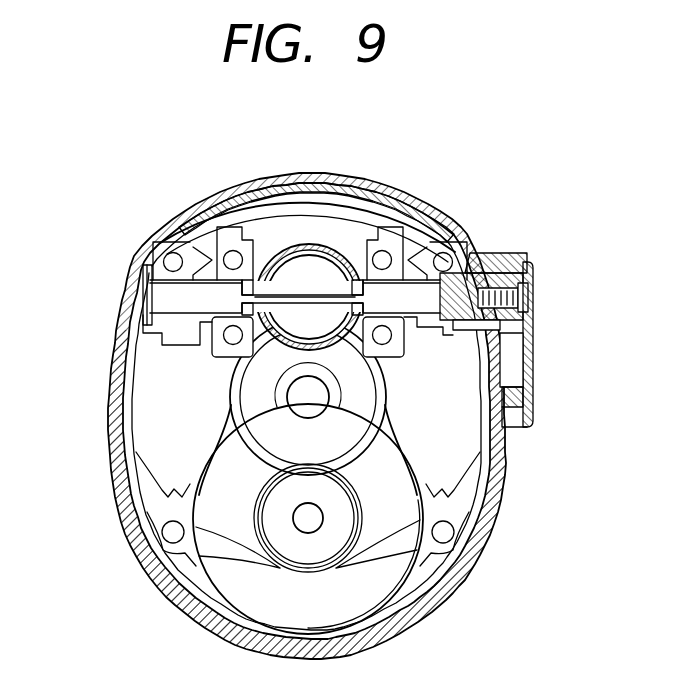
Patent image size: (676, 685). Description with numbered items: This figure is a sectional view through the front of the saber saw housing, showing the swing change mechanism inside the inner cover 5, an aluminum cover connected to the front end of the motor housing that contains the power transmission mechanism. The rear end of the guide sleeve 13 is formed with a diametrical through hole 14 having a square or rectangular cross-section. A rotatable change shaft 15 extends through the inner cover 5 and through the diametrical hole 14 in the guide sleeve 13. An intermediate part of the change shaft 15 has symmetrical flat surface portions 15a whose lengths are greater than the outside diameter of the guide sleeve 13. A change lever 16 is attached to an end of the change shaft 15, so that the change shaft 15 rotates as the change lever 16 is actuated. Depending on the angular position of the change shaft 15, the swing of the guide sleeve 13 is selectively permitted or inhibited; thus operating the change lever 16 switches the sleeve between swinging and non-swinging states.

The inner cover 5 is at (270, 200).
The guide sleeve 13 is at (337, 252).
The diametrical through hole 14 is at (247, 279).
The change shaft 15 is at (173, 303).
The flat surface portions 15a is at (265, 347).
The change lever 16 is at (533, 348).